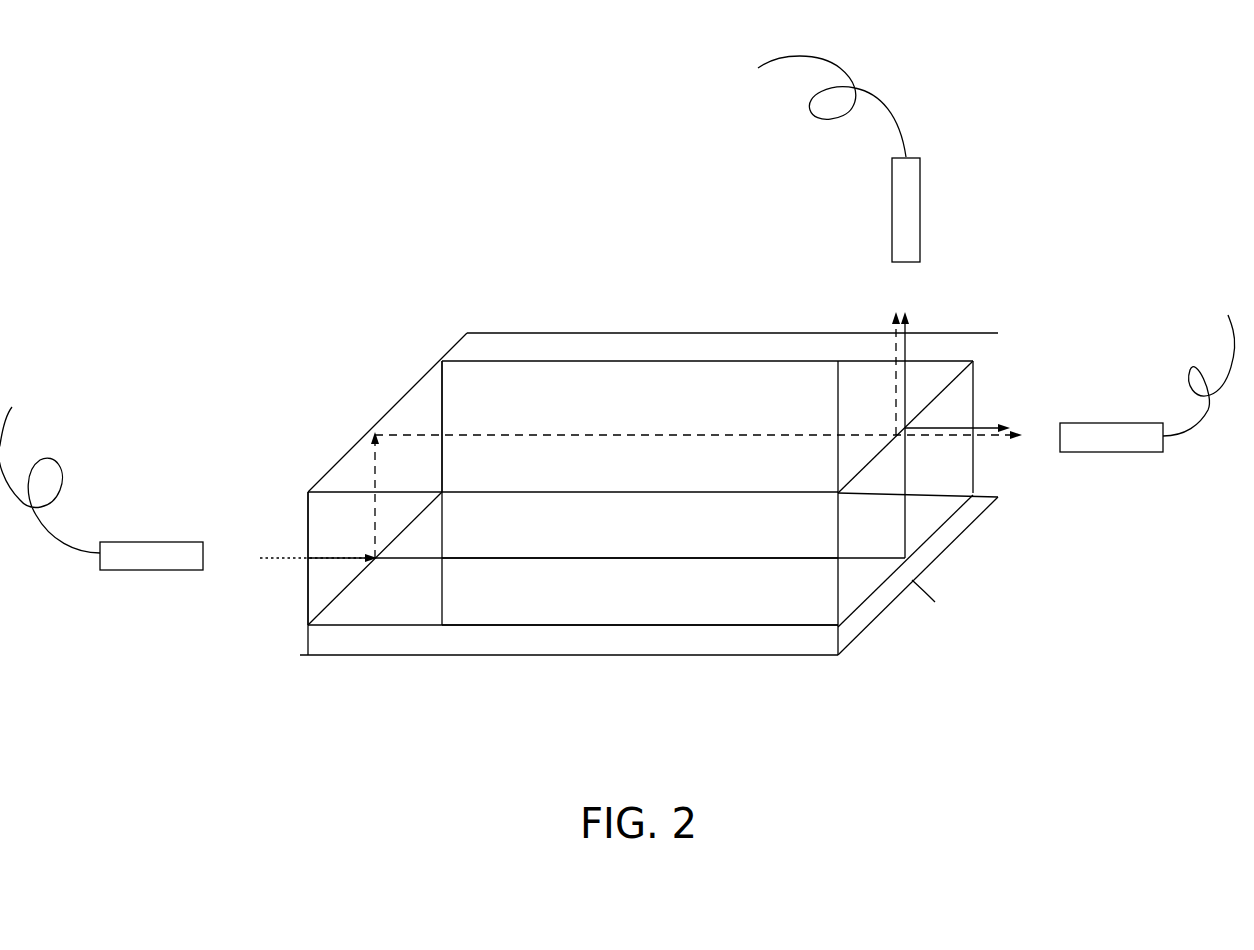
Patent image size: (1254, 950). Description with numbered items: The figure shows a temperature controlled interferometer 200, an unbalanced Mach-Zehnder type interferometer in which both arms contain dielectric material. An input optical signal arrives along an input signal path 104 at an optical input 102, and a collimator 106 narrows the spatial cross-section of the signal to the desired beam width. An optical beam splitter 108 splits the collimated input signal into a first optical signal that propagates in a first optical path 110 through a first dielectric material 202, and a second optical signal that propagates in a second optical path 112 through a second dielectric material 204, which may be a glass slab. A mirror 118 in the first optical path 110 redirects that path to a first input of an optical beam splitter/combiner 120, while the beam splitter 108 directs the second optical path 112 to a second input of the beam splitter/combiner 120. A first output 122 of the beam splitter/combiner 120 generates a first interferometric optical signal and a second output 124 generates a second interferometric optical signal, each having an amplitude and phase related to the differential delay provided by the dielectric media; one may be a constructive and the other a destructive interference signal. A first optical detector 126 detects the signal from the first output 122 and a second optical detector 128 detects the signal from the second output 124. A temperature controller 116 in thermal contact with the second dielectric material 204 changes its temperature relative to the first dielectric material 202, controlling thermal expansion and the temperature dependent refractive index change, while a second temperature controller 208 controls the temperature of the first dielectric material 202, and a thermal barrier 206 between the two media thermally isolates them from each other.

The temperature controlled interferometer 200 is at (572, 64).
The optical input 102 is at (360, 539).
The input signal path 104 is at (266, 553).
The collimator 106 is at (135, 570).
The optical beam splitter 108 is at (385, 655).
The first optical path 110 is at (377, 463).
The second optical path 112 is at (630, 558).
The temperature controller 116 is at (713, 640).
The mirror 118 is at (430, 415).
The optical beam splitter/combiner 120 is at (957, 483).
The first output 122 is at (934, 314).
The second output 124 is at (1016, 474).
The first optical detector 126 is at (920, 176).
The second optical detector 128 is at (1115, 452).
The first dielectric material 202 is at (650, 415).
The second dielectric material 204 is at (822, 612).
The thermal barrier 206 is at (772, 537).
The second temperature controller 208 is at (737, 348).